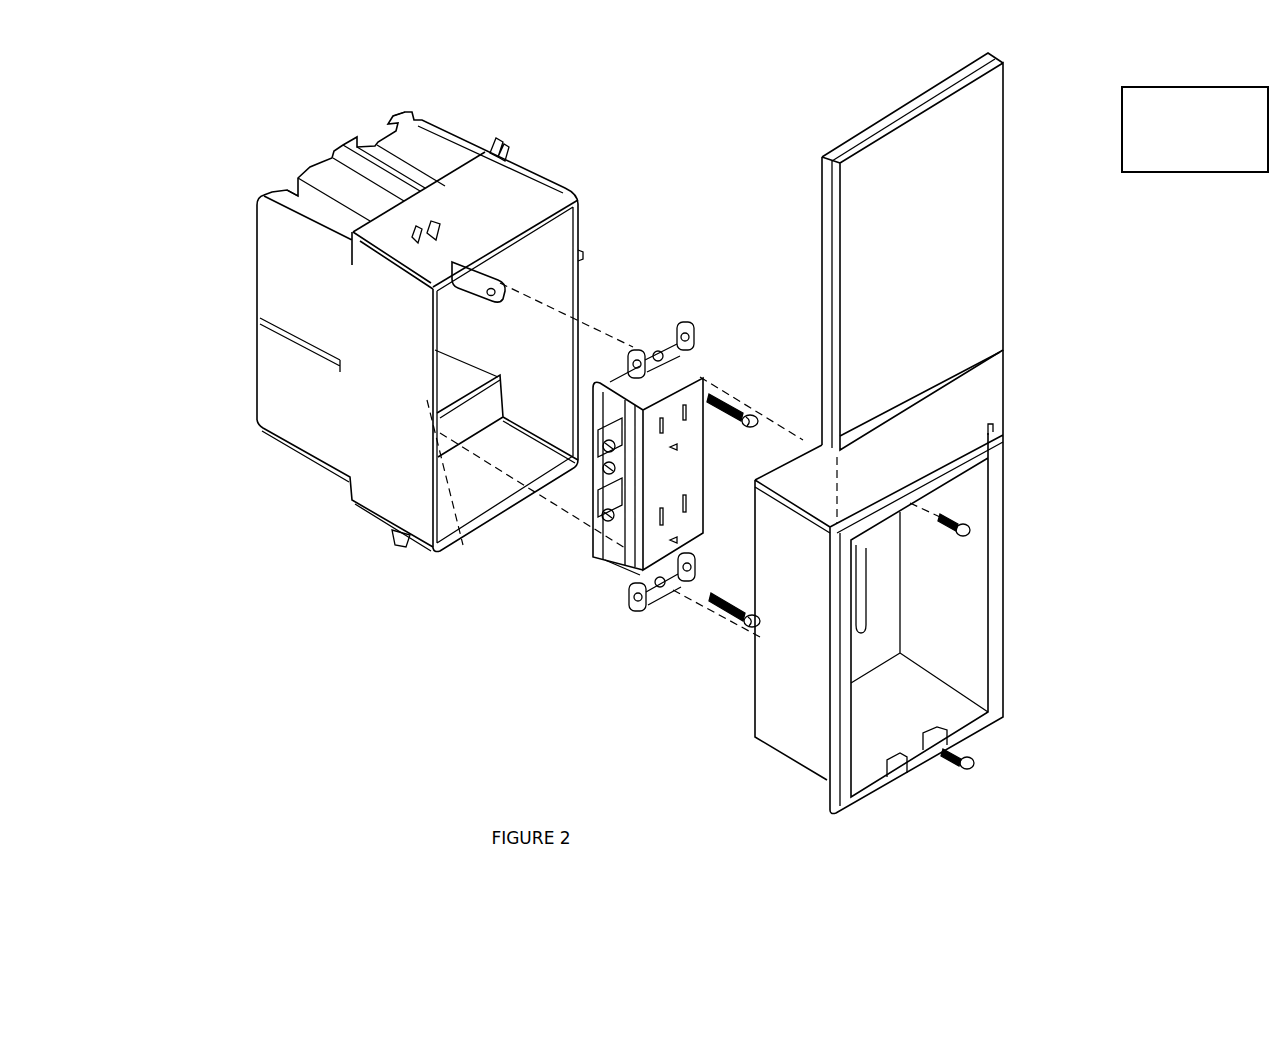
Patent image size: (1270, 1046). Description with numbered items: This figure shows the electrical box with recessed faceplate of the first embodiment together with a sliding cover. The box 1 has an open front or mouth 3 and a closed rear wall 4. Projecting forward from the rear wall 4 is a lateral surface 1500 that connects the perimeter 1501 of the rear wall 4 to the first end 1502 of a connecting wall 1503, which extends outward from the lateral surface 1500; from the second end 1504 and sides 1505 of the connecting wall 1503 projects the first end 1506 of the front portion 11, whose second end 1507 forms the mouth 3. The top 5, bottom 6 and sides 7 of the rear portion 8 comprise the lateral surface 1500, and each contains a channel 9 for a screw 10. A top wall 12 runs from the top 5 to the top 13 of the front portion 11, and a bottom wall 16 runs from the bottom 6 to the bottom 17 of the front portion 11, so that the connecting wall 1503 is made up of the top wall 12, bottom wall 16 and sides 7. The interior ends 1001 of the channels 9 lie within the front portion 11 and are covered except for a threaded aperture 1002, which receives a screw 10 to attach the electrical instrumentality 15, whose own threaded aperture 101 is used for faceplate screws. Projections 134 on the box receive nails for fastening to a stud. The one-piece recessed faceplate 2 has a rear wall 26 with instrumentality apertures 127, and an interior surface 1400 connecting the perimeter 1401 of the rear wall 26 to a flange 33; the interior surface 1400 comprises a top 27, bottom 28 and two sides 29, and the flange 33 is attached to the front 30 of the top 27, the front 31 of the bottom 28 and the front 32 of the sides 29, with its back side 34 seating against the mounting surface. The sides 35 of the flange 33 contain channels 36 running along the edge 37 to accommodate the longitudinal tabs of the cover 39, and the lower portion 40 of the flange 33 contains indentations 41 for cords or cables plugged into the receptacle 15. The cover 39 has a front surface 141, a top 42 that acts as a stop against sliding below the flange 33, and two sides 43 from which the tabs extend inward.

The box 1 is at (588, 90).
The one-piece recessed faceplate 2 is at (1112, 705).
The mouth 3 is at (567, 240).
The rear wall 4 is at (313, 160).
The top 5 is at (297, 167).
The bottom 6 is at (275, 435).
The sides 7 is at (268, 348).
The rear portion 8 is at (405, 113).
The channel 9 is at (325, 155).
The screw 10 is at (730, 400).
The front portion 11 is at (518, 173).
The top wall 12 is at (350, 237).
The top of the front portion 13 is at (533, 183).
The electrical instrumentality 15 is at (622, 563).
The bottom wall 16 is at (347, 487).
The bottom of the front portion 17 is at (370, 522).
The rear wall 26 is at (878, 583).
The top 27 is at (798, 467).
The bottom 28 is at (923, 767).
The sides 29 is at (967, 500).
The front of the top 30 is at (983, 477).
The front of the bottom 31 is at (890, 790).
The front of the two sides 32 is at (988, 650).
The flange 33 is at (970, 453).
The back side 34 is at (967, 430).
The sides 35 is at (1003, 443).
The channels 36 is at (990, 428).
The edge 37 is at (1005, 537).
The cover 39 is at (1090, 100).
The lower portion 40 is at (975, 740).
The indentations 41 is at (973, 755).
The top 42 is at (927, 83).
The sides 43 is at (823, 228).
The threaded aperture 101 is at (665, 343).
The instrumentality apertures 127 is at (868, 600).
The projections 134 is at (503, 138).
The front surface 141 is at (943, 233).
The interior ends 1001 is at (500, 286).
The threaded aperture 1002 is at (503, 297).
The interior surface 1400 is at (898, 425).
The perimeter 1401 is at (955, 615).
The lateral surface 1500 is at (438, 143).
The perimeter 1501 is at (342, 137).
The first end 1502 is at (337, 267).
The connecting wall 1503 is at (345, 253).
The second end 1504 is at (317, 190).
The sides 1505 is at (343, 250).
The first end 1506 is at (352, 507).
The second end 1507 is at (573, 190).